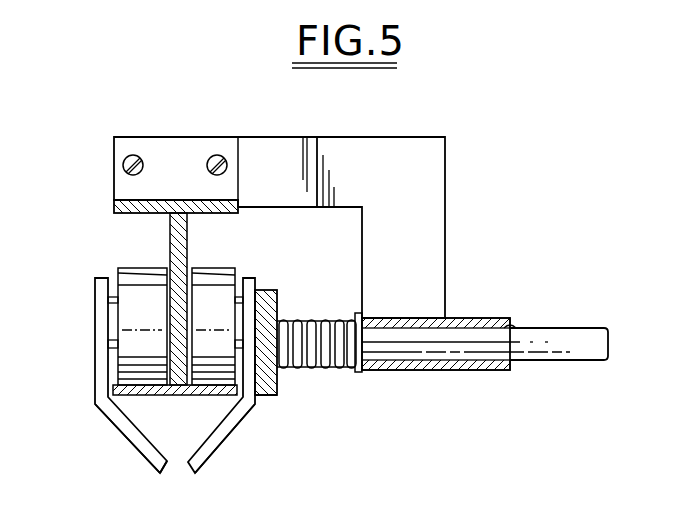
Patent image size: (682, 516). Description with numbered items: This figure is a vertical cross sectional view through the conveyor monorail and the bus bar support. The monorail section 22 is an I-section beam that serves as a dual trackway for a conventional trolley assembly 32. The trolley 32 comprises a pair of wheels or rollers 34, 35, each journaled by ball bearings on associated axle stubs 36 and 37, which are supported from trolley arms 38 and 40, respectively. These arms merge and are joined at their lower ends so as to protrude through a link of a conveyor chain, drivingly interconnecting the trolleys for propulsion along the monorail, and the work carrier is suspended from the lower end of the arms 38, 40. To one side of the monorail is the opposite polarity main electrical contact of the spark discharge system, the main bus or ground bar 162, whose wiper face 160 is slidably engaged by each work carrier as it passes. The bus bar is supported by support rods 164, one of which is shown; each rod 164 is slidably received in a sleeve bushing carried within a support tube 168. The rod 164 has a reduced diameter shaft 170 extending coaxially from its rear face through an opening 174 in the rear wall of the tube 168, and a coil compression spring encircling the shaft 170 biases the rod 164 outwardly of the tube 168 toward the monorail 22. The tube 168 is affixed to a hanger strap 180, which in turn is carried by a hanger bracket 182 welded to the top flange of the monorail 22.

The monorail section 22 is at (113, 208).
The trolley assembly 32 is at (118, 437).
The roller 34 is at (207, 268).
The roller 35 is at (128, 266).
The axle stub 36 is at (252, 320).
The axle stub 37 is at (108, 318).
The trolley arm 38 is at (222, 440).
The trolley arm 40 is at (143, 458).
The wiper face 160 is at (264, 312).
The main bus or ground bar 162 is at (281, 398).
The support rod 164 is at (310, 372).
The support tube 168 is at (459, 318).
The reduced diameter shaft 170 is at (585, 332).
The opening 174 is at (517, 324).
The hanger strap 180 is at (443, 200).
The hanger bracket 182 is at (353, 137).